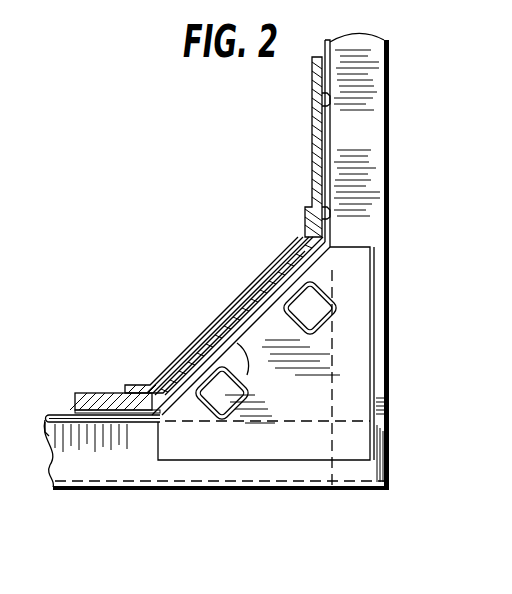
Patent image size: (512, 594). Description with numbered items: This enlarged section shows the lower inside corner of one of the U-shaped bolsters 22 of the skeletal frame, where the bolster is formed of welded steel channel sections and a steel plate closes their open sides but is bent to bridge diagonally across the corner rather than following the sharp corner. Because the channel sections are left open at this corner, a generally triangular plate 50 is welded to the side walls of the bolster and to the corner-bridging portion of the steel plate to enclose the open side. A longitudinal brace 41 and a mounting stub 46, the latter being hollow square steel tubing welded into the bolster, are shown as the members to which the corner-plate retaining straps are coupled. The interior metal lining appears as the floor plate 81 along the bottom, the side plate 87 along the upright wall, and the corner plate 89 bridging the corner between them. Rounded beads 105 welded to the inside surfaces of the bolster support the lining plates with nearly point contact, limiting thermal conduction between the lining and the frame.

The bolster 22 is at (167, 497).
The longitudinal brace 41 is at (340, 318).
The mounting stub 46 is at (230, 330).
The triangular plate 50 is at (357, 338).
The floor plate 81 is at (95, 393).
The side plate 87 is at (313, 127).
The corner plate 89 is at (260, 300).
The bead 105 is at (331, 99).